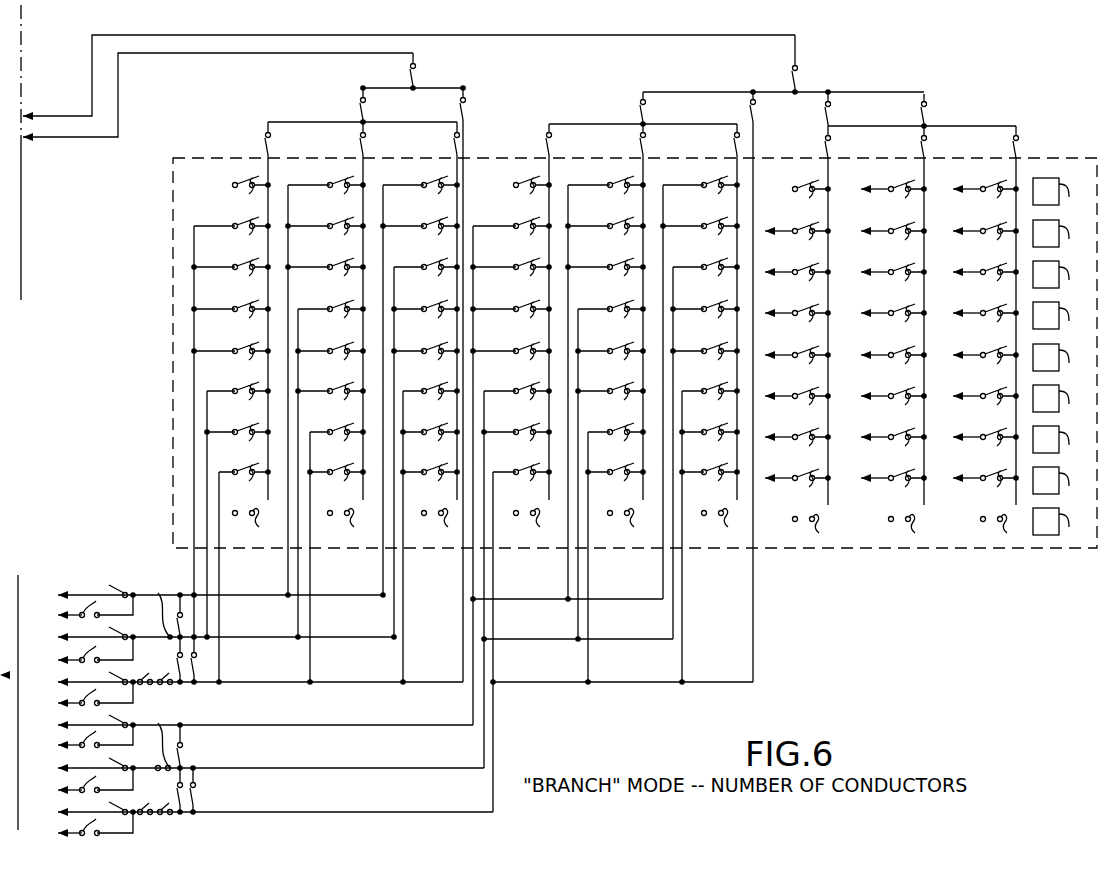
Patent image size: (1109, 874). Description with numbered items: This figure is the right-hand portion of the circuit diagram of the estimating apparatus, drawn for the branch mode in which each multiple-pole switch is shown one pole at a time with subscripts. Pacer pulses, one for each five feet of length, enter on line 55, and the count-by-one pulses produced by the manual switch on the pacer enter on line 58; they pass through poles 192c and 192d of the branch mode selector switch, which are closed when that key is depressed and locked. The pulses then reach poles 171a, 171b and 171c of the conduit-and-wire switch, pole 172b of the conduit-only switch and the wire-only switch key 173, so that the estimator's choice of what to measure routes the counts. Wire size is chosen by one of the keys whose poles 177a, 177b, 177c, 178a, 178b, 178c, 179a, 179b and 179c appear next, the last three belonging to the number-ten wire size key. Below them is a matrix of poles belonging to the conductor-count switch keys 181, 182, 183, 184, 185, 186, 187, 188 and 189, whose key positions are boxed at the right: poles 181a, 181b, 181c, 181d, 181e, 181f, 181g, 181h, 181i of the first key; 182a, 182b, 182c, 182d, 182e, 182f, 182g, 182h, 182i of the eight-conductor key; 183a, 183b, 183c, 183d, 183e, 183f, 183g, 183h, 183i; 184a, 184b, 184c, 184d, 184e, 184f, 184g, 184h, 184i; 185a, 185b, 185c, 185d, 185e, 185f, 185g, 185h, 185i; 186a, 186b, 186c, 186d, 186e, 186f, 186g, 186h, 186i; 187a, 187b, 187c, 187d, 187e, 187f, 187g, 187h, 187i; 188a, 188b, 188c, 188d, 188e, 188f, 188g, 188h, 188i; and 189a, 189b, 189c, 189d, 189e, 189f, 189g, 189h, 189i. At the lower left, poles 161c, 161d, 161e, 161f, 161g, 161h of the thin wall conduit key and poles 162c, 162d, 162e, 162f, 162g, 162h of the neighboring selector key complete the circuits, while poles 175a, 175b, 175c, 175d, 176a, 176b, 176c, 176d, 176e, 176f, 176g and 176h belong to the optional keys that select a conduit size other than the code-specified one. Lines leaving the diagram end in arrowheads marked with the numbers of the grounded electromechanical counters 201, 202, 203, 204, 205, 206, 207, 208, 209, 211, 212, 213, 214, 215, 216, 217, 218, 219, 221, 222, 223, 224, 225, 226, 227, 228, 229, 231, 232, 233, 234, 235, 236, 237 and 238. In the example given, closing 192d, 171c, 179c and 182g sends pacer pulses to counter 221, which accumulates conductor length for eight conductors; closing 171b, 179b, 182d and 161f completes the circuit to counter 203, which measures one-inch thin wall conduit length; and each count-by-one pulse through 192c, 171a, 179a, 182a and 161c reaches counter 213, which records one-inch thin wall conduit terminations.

The line 55 is at (59, 113).
The line 58 is at (61, 138).
The branch mode selector switch pole 192c is at (414, 66).
The branch mode selector switch pole 192d is at (798, 68).
The conduit and wire switch pole 171a is at (360, 96).
The conduit and wire switch pole 171b is at (638, 96).
The conduit and wire switch pole 171c is at (826, 110).
The conduit only switch pole 172b is at (750, 104).
The wire only switch key 173 is at (922, 110).
The conduit size selector switch pole 176a is at (465, 106).
The conduit size selector switch pole 176b is at (182, 616).
The conduit size selector switch pole 176c is at (182, 673).
The conduit size selector switch pole 176d is at (166, 683).
The conduit size selector switch pole 176e is at (176, 768).
The conduit size selector switch pole 176f is at (185, 745).
The conduit size selector switch pole 176g is at (190, 805).
The conduit size selector switch pole 176h is at (160, 811).
The conduit size selector switch pole 175a is at (143, 687).
The conduit size selector switch pole 175b is at (186, 654).
The conduit size selector switch pole 175c is at (148, 814).
The conduit size selector switch pole 175d is at (196, 791).
The wire size selector switch pole 177a is at (455, 146).
The wire size selector switch pole 177b is at (734, 147).
The wire size selector switch pole 177c is at (1012, 150).
The wire size selector switch pole 178a is at (362, 146).
The wire size selector switch pole 178b is at (640, 147).
The wire size selector switch pole 178c is at (920, 150).
The number ten wire size switch pole 179a is at (267, 146).
The number ten wire size switch pole 179b is at (546, 147).
The number ten wire size switch pole 179c is at (824, 150).
The thin wall conduit switch pole 161c is at (116, 589).
The thin wall conduit switch pole 161d is at (111, 632).
The thin wall conduit switch pole 161e is at (111, 677).
The thin wall conduit switch pole 161f is at (111, 720).
The thin wall conduit switch pole 161g is at (111, 763).
The thin wall conduit switch pole 161h is at (111, 807).
The selector switch pole 162c is at (112, 607).
The selector switch pole 162d is at (112, 652).
The selector switch pole 162e is at (112, 695).
The selector switch pole 162f is at (110, 737).
The selector switch pole 162g is at (112, 782).
The selector switch pole 162h is at (112, 825).
The electromechanical counter 201 is at (257, 810).
The electromechanical counter 202 is at (253, 766).
The electromechanical counter 203 is at (247, 723).
The electromechanical counter 204 is at (52, 831).
The electromechanical counter 205 is at (52, 788).
The electromechanical counter 206 is at (52, 743).
The electromechanical counter 207 is at (774, 470).
The electromechanical counter 208 is at (774, 429).
The electromechanical counter 209 is at (774, 388).
The electromechanical counter 211 is at (242, 680).
The electromechanical counter 212 is at (208, 635).
The electromechanical counter 213 is at (202, 593).
The electromechanical counter 214 is at (52, 701).
The electromechanical counter 215 is at (52, 658).
The electromechanical counter 216 is at (52, 613).
The electromechanical counter 217 is at (774, 347).
The electromechanical counter 218 is at (774, 305).
The electromechanical counter 219 is at (774, 264).
The electromechanical counter 221 is at (774, 223).
The electromechanical counter 222 is at (870, 470).
The electromechanical counter 223 is at (870, 429).
The electromechanical counter 224 is at (870, 388).
The electromechanical counter 225 is at (870, 347).
The electromechanical counter 226 is at (870, 305).
The electromechanical counter 227 is at (870, 264).
The electromechanical counter 228 is at (870, 223).
The electromechanical counter 229 is at (870, 181).
The electromechanical counter 231 is at (962, 470).
The electromechanical counter 232 is at (962, 429).
The electromechanical counter 233 is at (962, 388).
The electromechanical counter 234 is at (962, 347).
The electromechanical counter 235 is at (962, 305).
The electromechanical counter 236 is at (962, 264).
The electromechanical counter 237 is at (962, 223).
The electromechanical counter 238 is at (962, 181).
The switch key 181 is at (1066, 199).
The eight conductor switch key 182 is at (1066, 241).
The switch key 183 is at (1066, 282).
The switch key 184 is at (1066, 323).
The switch key 185 is at (1066, 365).
The switch key 186 is at (1066, 406).
The switch key 187 is at (1066, 447).
The switch key 188 is at (1066, 488).
The switch key 189 is at (1066, 529).
The switch pole 181a is at (234, 196).
The switch pole 181b is at (329, 196).
The switch pole 181c is at (423, 196).
The switch pole 181d is at (515, 196).
The switch pole 181e is at (609, 196).
The switch pole 181f is at (703, 196).
The switch pole 181g is at (800, 197).
The switch pole 181h is at (896, 197).
The switch pole 181i is at (988, 197).
The eight conductor switch pole 182a is at (234, 237).
The eight conductor switch pole 182b is at (329, 237).
The eight conductor switch pole 182c is at (423, 237).
The eight conductor switch pole 182d is at (515, 237).
The eight conductor switch pole 182e is at (609, 237).
The eight conductor switch pole 182f is at (703, 237).
The eight conductor switch pole 182g is at (800, 239).
The eight conductor switch pole 182h is at (896, 239).
The eight conductor switch pole 182i is at (988, 239).
The switch pole 183a is at (234, 278).
The switch pole 183b is at (329, 278).
The switch pole 183c is at (423, 278).
The switch pole 183d is at (515, 278).
The switch pole 183e is at (609, 278).
The switch pole 183f is at (703, 278).
The switch pole 183g is at (800, 280).
The switch pole 183h is at (896, 280).
The switch pole 183i is at (988, 280).
The switch pole 184a is at (234, 320).
The switch pole 184b is at (329, 320).
The switch pole 184c is at (423, 320).
The switch pole 184d is at (515, 320).
The switch pole 184e is at (609, 320).
The switch pole 184f is at (703, 320).
The switch pole 184g is at (800, 321).
The switch pole 184h is at (896, 321).
The switch pole 184i is at (988, 321).
The switch pole 185a is at (234, 362).
The switch pole 185b is at (329, 362).
The switch pole 185c is at (423, 362).
The switch pole 185d is at (515, 362).
The switch pole 185e is at (609, 362).
The switch pole 185f is at (703, 362).
The switch pole 185g is at (800, 363).
The switch pole 185h is at (896, 363).
The switch pole 185i is at (988, 363).
The switch pole 186a is at (234, 402).
The switch pole 186b is at (329, 402).
The switch pole 186c is at (423, 402).
The switch pole 186d is at (515, 402).
The switch pole 186e is at (609, 402).
The switch pole 186f is at (703, 402).
The switch pole 186g is at (800, 404).
The switch pole 186h is at (896, 404).
The switch pole 186i is at (988, 404).
The switch pole 187a is at (234, 443).
The switch pole 187b is at (329, 443).
The switch pole 187c is at (423, 443).
The switch pole 187d is at (515, 443).
The switch pole 187e is at (609, 443).
The switch pole 187f is at (703, 443).
The switch pole 187g is at (800, 445).
The switch pole 187h is at (896, 445).
The switch pole 187i is at (988, 445).
The switch pole 188a is at (234, 483).
The switch pole 188b is at (329, 483).
The switch pole 188c is at (423, 483).
The switch pole 188d is at (515, 483).
The switch pole 188e is at (609, 483).
The switch pole 188f is at (703, 483).
The switch pole 188g is at (800, 486).
The switch pole 188h is at (896, 486).
The switch pole 188i is at (988, 486).
The switch pole 189a is at (228, 526).
The switch pole 189b is at (323, 526).
The switch pole 189c is at (417, 526).
The switch pole 189d is at (509, 526).
The switch pole 189e is at (603, 526).
The switch pole 189f is at (697, 526).
The switch pole 189g is at (795, 529).
The switch pole 189h is at (891, 529).
The switch pole 189i is at (982, 529).